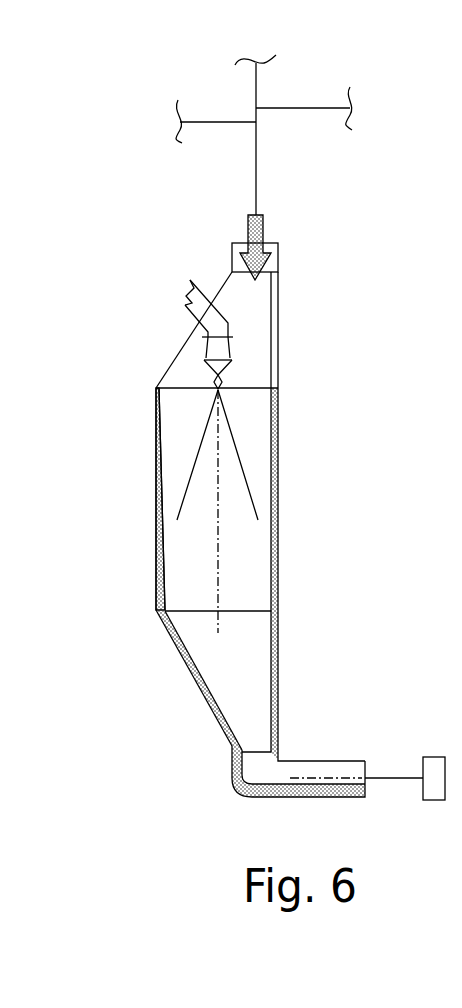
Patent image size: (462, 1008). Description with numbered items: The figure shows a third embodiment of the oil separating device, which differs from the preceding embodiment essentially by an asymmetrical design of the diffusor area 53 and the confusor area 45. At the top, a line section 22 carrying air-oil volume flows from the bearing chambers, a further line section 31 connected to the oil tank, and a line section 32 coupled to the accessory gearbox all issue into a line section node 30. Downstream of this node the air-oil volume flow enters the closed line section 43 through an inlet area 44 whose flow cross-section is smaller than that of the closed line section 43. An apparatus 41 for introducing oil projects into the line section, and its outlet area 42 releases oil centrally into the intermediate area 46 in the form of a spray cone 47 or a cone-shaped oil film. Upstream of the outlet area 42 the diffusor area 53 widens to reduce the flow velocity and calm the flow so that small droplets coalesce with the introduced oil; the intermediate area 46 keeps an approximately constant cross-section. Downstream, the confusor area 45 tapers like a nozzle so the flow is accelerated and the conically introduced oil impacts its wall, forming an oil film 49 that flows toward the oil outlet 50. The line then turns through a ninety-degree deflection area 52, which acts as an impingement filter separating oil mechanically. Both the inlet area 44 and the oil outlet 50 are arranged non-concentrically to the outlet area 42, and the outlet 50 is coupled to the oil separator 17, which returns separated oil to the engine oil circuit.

The oil separator 17 is at (433, 757).
The line section 22 is at (302, 108).
The line section node 30 is at (250, 115).
The line section 31 is at (254, 66).
The line section 32 is at (218, 123).
The apparatus for introducing oil 41 is at (221, 377).
The outlet area 42 is at (235, 347).
The closed line section 43 is at (155, 538).
The inlet area 44 is at (278, 255).
The confusor area 45 is at (197, 682).
The intermediate area 46 is at (156, 468).
The spray cone 47 is at (237, 447).
The oil film 49 is at (278, 560).
The oil outlet 50 is at (255, 800).
The deflection area 52 is at (230, 786).
The diffusor area 53 is at (187, 346).